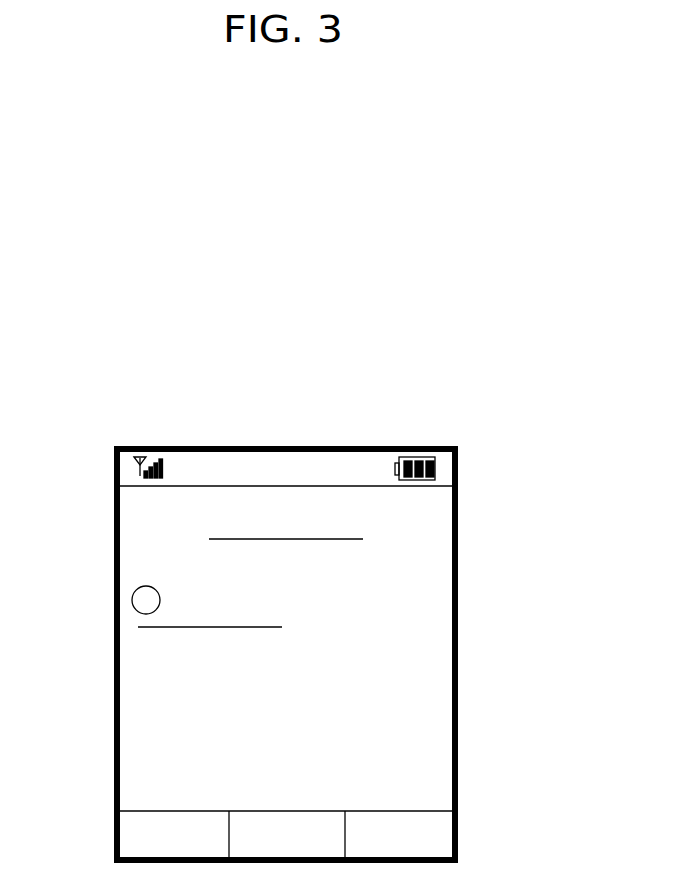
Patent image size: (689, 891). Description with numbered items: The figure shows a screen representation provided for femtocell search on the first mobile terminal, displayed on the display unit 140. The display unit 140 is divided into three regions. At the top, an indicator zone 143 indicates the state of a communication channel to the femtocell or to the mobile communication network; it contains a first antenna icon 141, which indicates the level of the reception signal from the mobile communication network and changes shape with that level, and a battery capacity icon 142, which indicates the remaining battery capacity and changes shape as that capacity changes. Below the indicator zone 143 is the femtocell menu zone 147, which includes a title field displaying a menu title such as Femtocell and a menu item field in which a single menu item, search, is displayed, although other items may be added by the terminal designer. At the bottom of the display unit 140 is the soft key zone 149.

The display unit 140 is at (473, 578).
The first antenna icon 141 is at (160, 452).
The battery capacity icon 142 is at (415, 457).
The indicator zone 143 is at (125, 475).
The femtocell menu zone 147 is at (122, 570).
The soft key zone 149 is at (123, 832).